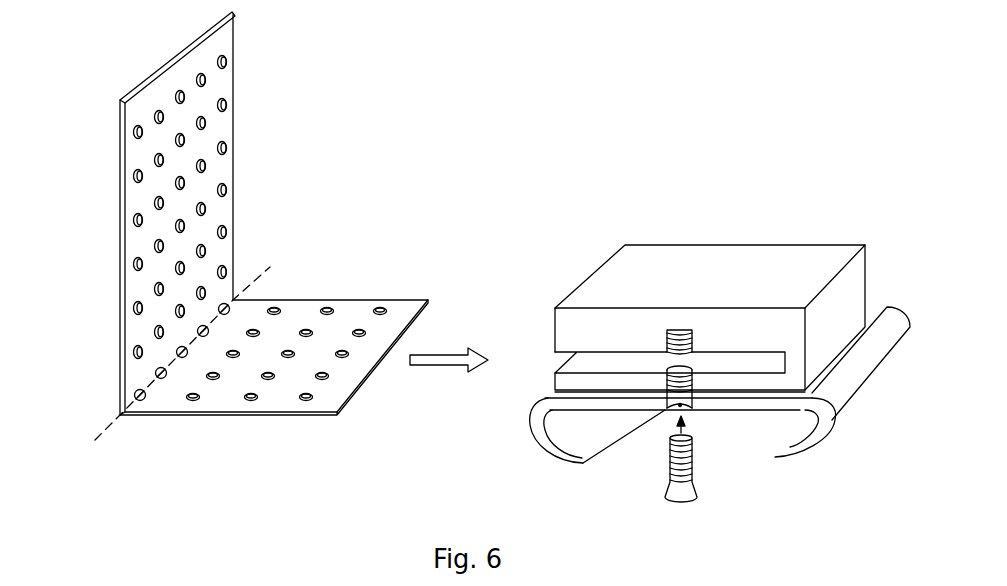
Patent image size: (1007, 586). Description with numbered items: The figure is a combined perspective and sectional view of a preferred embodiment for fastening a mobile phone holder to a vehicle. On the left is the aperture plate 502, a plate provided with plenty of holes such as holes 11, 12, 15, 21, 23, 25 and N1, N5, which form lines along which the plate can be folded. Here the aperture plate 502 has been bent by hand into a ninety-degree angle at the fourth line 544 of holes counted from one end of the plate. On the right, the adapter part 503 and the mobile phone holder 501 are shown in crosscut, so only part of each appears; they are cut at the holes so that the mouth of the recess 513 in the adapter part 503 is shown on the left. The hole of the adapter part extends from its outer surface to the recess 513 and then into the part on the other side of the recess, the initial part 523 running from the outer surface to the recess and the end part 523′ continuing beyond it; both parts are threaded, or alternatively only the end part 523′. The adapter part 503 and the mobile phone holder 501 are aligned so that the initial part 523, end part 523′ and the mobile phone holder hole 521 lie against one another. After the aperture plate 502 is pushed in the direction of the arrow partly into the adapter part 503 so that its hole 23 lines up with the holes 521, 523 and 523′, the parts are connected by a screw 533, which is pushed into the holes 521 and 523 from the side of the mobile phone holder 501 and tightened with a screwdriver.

The hole N1 is at (134, 130).
The hole N5 is at (226, 59).
The aperture plate 502 is at (118, 223).
The line of holes 544 is at (173, 355).
The hole 23 is at (290, 352).
The hole 25 is at (329, 309).
The hole 15 is at (383, 309).
The hole 12 is at (326, 378).
The hole 21 is at (250, 400).
The hole 11 is at (305, 400).
The adapter part 503 is at (692, 252).
The recess 513 is at (598, 362).
The end part of the hole 523′ is at (681, 332).
The initial part of the hole 523 is at (667, 382).
The mobile phone holder hole 521 is at (682, 406).
The mobile phone holder 501 is at (836, 425).
The screw 533 is at (694, 480).